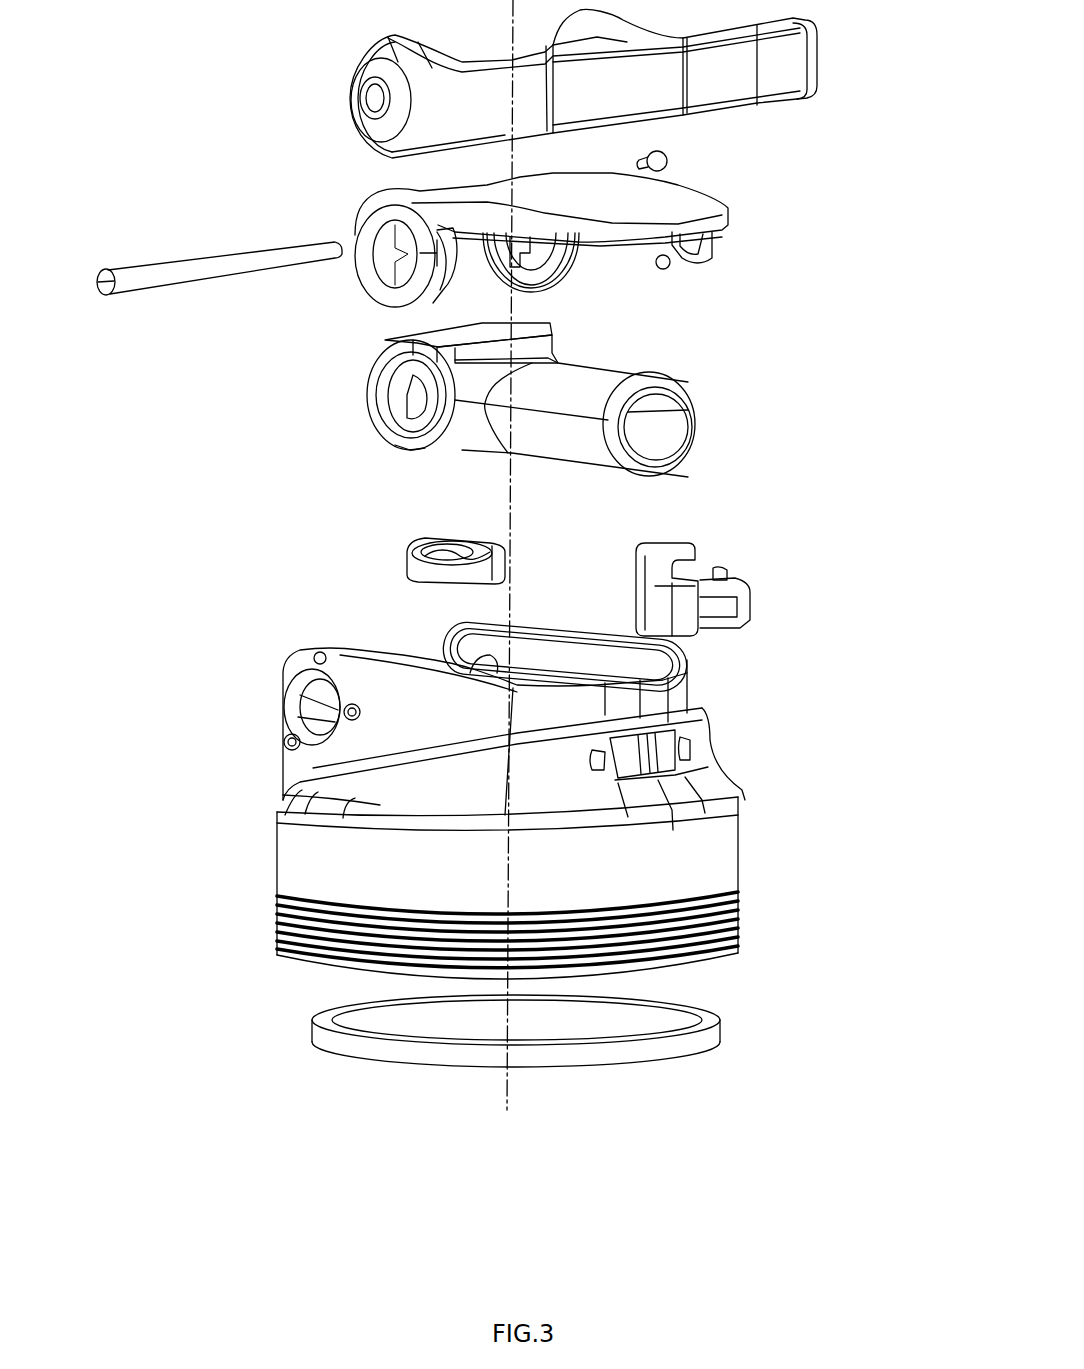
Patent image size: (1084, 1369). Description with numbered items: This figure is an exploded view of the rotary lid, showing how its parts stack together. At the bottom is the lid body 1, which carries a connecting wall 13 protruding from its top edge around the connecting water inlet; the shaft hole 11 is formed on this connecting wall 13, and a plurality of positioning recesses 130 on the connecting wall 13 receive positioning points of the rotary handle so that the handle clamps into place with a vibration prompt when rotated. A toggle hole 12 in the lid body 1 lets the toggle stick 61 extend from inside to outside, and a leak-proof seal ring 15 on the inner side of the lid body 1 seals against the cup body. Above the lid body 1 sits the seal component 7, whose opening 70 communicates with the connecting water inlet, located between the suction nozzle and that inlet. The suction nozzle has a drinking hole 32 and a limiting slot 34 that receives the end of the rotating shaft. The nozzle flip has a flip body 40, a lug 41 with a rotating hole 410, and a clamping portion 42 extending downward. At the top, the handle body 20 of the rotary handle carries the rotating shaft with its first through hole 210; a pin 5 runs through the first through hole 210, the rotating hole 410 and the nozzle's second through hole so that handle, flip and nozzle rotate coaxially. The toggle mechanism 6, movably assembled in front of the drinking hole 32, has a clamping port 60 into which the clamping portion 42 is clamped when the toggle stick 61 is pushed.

The lid body 1 is at (281, 861).
The shaft hole 11 is at (283, 710).
The toggle hole 12 is at (703, 780).
The connecting wall 13 is at (352, 650).
The positioning recess 130 is at (250, 753).
The leak-proof seal ring 15 is at (708, 1022).
The handle body 20 is at (792, 60).
The first through hole 210 is at (368, 107).
The drinking hole 32 is at (700, 432).
The limiting slot 34 is at (362, 412).
The flip body 40 is at (678, 208).
The lug 41 is at (392, 296).
The rotating hole 410 is at (373, 262).
The clamping portion 42 is at (705, 264).
The pin 5 is at (235, 260).
The toggle mechanism 6 is at (702, 626).
The clamping port 60 is at (737, 535).
The toggle stick 61 is at (747, 588).
The seal component 7 is at (413, 570).
The opening 70 is at (430, 548).